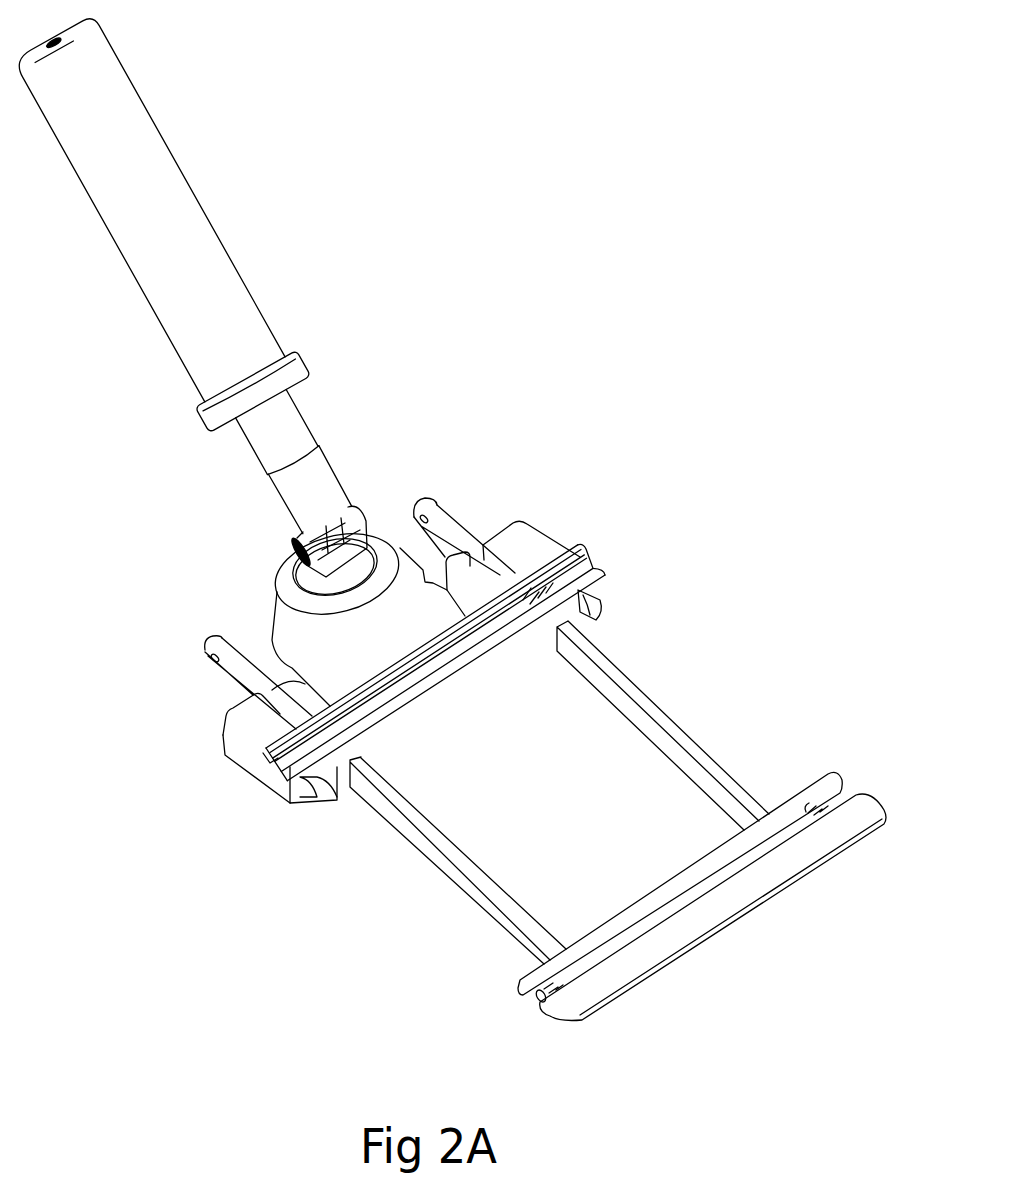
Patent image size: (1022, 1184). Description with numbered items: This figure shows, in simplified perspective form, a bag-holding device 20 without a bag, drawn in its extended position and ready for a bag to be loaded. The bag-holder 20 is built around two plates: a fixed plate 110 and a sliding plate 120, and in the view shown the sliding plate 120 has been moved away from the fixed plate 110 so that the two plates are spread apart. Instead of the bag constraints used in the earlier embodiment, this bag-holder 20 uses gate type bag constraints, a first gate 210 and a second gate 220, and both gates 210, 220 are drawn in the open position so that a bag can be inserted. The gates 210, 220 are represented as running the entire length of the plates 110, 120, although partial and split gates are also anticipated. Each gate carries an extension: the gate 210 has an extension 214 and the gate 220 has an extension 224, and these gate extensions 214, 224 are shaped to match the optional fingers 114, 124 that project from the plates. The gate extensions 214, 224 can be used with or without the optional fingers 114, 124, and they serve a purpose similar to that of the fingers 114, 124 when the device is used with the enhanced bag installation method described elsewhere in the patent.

The bag-holding device 20 is at (470, 283).
The fixed plate 110 is at (516, 658).
The finger 114 is at (830, 775).
The sliding plate 120 is at (650, 912).
The finger 124 is at (600, 568).
The gate type bag constraint 210 is at (375, 685).
The gate extension 214 is at (576, 545).
The gate type bag constraint 220 is at (757, 880).
The gate extension 224 is at (862, 802).